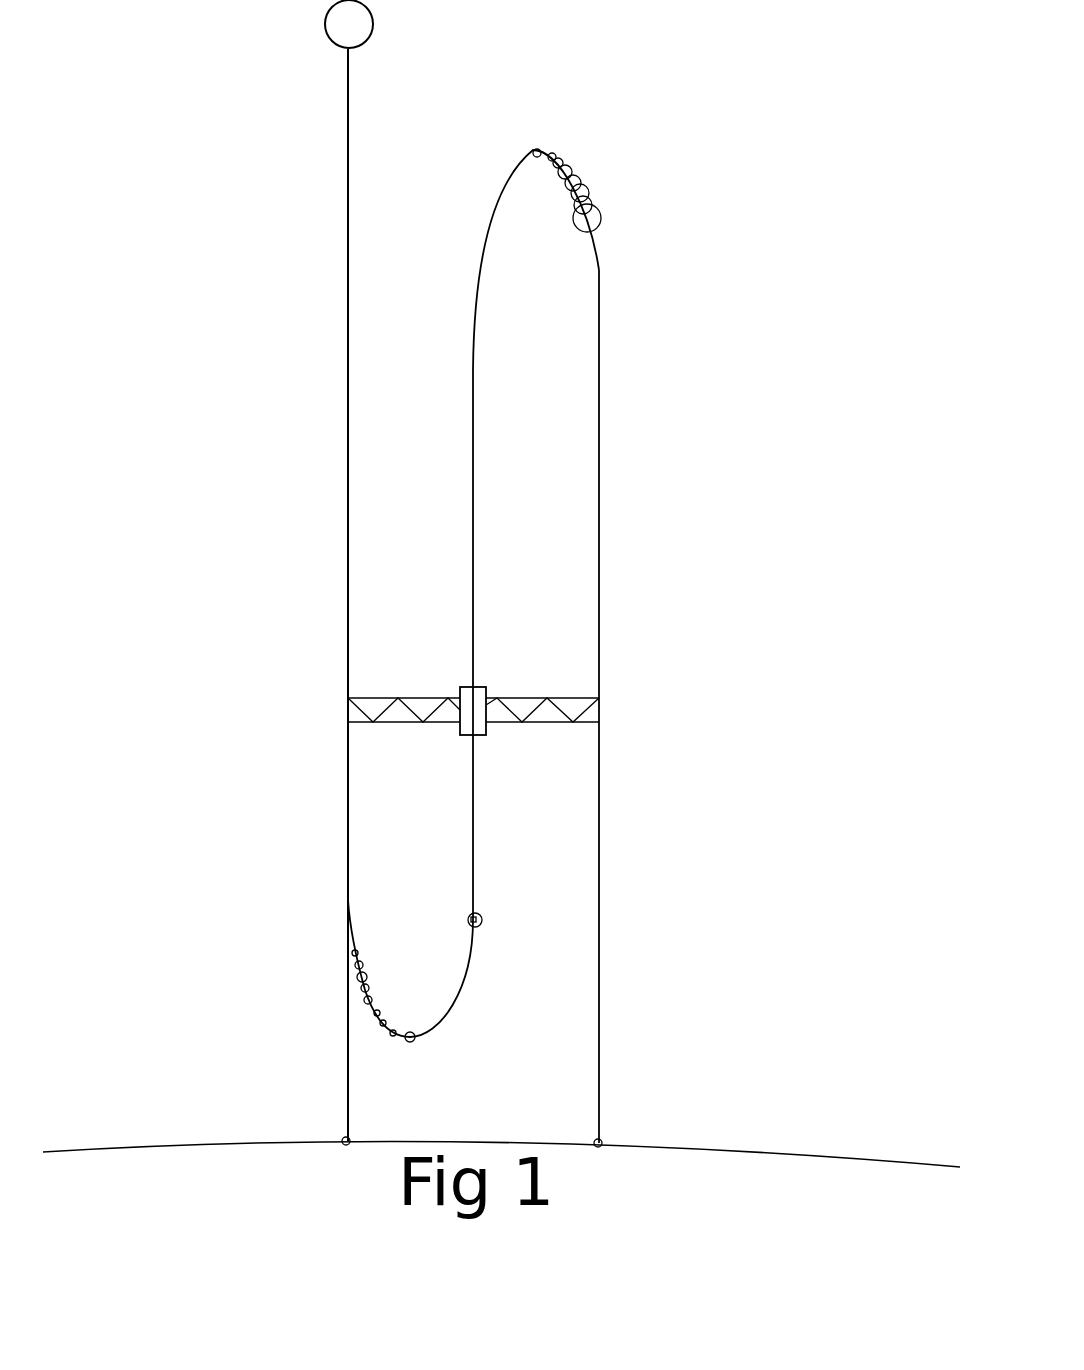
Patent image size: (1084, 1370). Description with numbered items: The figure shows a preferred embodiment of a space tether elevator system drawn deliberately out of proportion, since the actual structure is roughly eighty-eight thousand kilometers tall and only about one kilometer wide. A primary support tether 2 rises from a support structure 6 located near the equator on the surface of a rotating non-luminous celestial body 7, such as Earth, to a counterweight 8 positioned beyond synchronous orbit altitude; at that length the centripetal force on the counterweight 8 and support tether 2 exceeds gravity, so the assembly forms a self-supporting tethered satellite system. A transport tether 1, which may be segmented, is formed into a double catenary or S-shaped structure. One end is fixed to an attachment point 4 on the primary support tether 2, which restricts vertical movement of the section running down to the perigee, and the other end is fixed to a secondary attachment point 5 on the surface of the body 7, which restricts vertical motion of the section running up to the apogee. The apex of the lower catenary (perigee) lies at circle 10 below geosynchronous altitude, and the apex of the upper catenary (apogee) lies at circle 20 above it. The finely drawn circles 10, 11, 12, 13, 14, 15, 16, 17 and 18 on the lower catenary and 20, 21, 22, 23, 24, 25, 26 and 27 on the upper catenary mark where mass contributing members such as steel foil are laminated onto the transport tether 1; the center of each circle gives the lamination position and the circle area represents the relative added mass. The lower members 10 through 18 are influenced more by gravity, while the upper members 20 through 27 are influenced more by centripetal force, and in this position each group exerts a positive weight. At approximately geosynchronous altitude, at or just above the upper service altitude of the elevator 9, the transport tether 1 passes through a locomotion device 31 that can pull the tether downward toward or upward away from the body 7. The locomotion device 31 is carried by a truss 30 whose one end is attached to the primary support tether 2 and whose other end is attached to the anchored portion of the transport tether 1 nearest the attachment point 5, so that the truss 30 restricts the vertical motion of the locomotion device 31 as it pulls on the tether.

The transport tether 1 is at (490, 210).
The primary support tether 2 is at (347, 227).
The attachment point 4 is at (348, 783).
The secondary attachment point 5 is at (600, 1140).
The support structure 6 is at (344, 1137).
The rotating non-luminous celestial body 7 is at (155, 1143).
The counterweight 8 is at (325, 30).
The elevator 9 is at (483, 920).
The finely drawn circle 10 is at (410, 1042).
The finely drawn circle 11 is at (393, 1036).
The finely drawn circle 12 is at (382, 1026).
The finely drawn circle 13 is at (376, 1015).
The finely drawn circle 14 is at (371, 1002).
The finely drawn circle 15 is at (369, 988).
The finely drawn circle 16 is at (367, 977).
The finely drawn circle 17 is at (362, 963).
The finely drawn circle 18 is at (357, 950).
The finely drawn circle 20 is at (533, 152).
The finely drawn circle 21 is at (549, 155).
The finely drawn circle 22 is at (556, 159).
The finely drawn circle 23 is at (566, 165).
The finely drawn circle 24 is at (575, 178).
The finely drawn circle 25 is at (571, 194).
The finely drawn circle 26 is at (576, 210).
The finely drawn circle 27 is at (584, 231).
The truss 30 is at (387, 697).
The locomotion device 31 is at (486, 687).